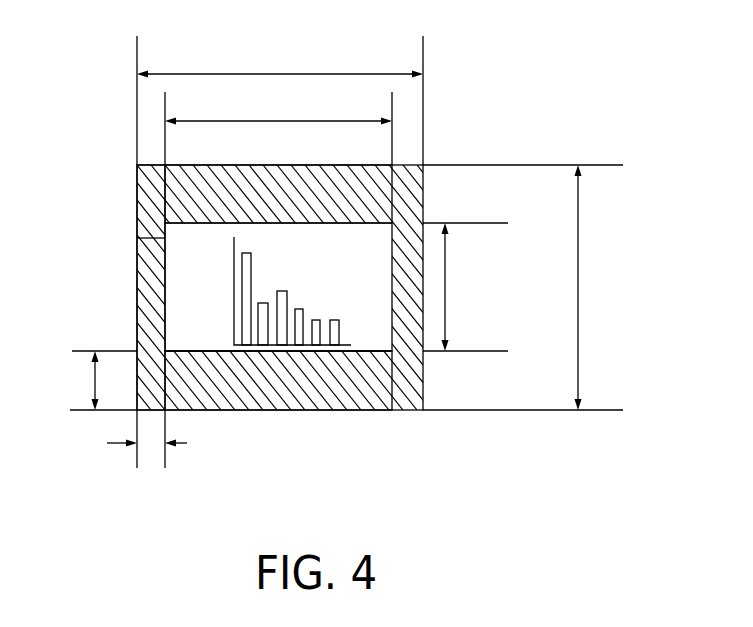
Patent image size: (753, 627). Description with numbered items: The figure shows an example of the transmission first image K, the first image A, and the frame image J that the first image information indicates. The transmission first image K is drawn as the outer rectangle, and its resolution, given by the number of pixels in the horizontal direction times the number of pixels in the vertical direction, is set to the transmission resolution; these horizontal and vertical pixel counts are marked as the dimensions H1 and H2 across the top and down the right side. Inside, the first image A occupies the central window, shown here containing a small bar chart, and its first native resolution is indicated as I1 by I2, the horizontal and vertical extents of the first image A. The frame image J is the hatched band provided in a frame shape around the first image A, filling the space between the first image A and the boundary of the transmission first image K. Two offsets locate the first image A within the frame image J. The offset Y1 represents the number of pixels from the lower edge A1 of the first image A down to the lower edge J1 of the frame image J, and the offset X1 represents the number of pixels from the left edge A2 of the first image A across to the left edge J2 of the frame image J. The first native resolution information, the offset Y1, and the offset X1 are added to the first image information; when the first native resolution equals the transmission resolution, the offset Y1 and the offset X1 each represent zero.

The transmission first image K is at (137, 170).
The frame image J is at (230, 180).
The first image A is at (315, 238).
The left edge of the first image A2 is at (137, 238).
The left edge of the frame image J2 is at (137, 292).
The lower edge of the first image A1 is at (285, 352).
The lower edge of the frame image J1 is at (362, 410).
The horizontal pixel count of the transmission first image H1 is at (280, 65).
The horizontal resolution of the first image I1 is at (278, 112).
The vertical pixel count of the transmission first image H2 is at (596, 287).
The vertical resolution of the first image I2 is at (459, 287).
The offset X1 is at (147, 469).
The offset Y1 is at (77, 380).